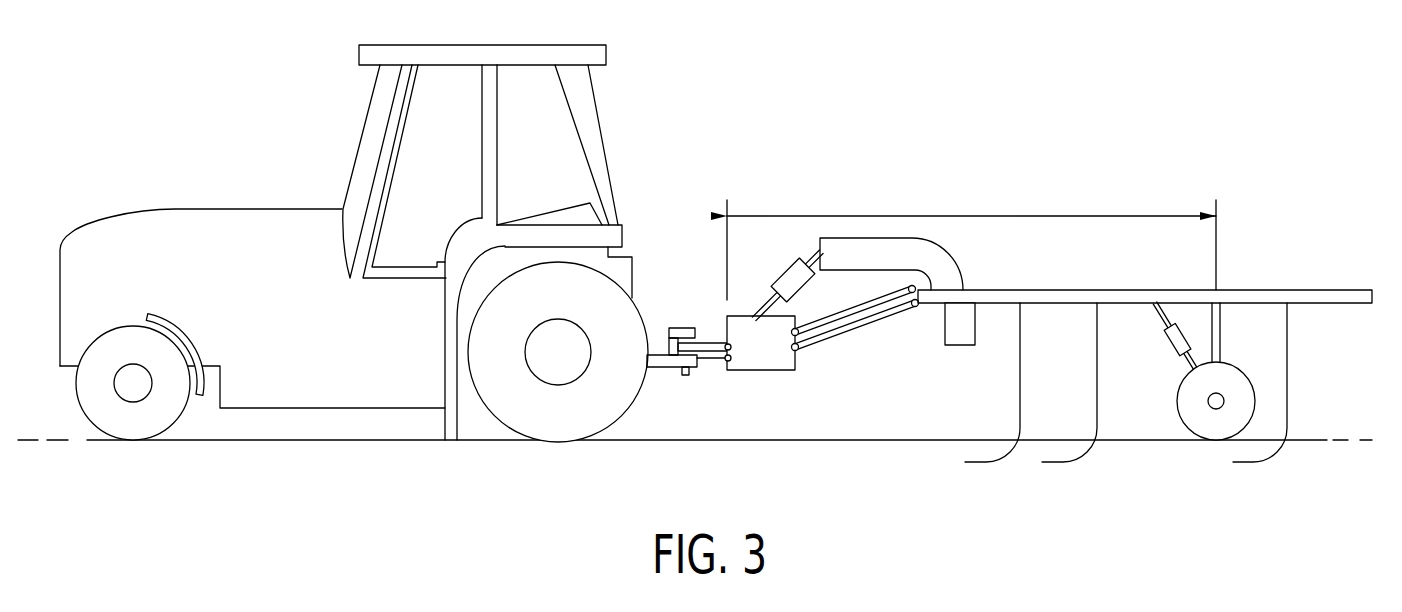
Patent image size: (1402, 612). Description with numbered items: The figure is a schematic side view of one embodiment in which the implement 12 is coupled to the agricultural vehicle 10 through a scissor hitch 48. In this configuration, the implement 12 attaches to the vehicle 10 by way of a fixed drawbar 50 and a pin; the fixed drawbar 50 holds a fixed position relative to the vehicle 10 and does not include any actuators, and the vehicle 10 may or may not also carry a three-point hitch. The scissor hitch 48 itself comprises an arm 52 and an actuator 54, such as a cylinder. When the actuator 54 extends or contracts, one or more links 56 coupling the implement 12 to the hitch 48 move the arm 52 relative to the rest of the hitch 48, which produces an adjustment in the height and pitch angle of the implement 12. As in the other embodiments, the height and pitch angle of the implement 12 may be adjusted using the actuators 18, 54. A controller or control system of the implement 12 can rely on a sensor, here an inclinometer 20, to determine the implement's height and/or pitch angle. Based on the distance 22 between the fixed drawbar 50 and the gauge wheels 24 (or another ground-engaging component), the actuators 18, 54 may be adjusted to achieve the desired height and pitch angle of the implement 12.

The agricultural vehicle 10 is at (277, 85).
The implement 12 is at (1150, 314).
The actuator 18 is at (1178, 336).
The inclinometer 20 is at (963, 345).
The distance 22 is at (968, 217).
The gauge wheels 24 is at (1253, 400).
The scissor hitch 48 is at (806, 373).
The fixed drawbar 50 is at (660, 368).
The arm 52 is at (952, 248).
The actuator 54 is at (786, 270).
The links 56 is at (862, 343).